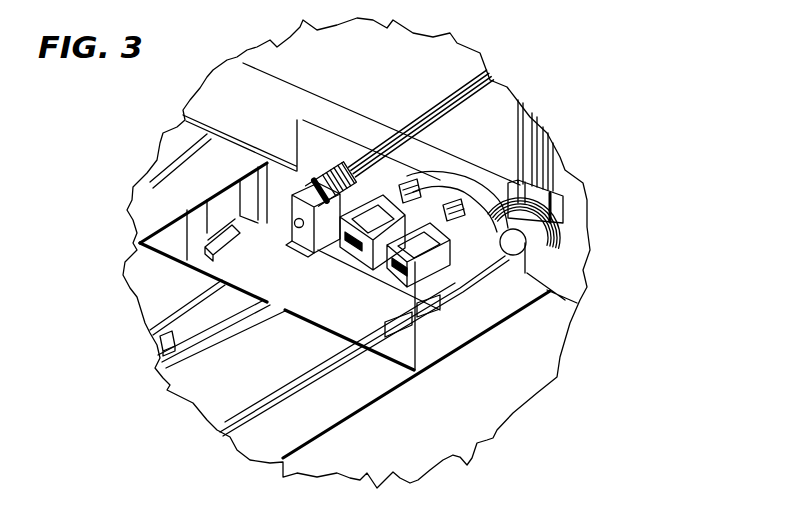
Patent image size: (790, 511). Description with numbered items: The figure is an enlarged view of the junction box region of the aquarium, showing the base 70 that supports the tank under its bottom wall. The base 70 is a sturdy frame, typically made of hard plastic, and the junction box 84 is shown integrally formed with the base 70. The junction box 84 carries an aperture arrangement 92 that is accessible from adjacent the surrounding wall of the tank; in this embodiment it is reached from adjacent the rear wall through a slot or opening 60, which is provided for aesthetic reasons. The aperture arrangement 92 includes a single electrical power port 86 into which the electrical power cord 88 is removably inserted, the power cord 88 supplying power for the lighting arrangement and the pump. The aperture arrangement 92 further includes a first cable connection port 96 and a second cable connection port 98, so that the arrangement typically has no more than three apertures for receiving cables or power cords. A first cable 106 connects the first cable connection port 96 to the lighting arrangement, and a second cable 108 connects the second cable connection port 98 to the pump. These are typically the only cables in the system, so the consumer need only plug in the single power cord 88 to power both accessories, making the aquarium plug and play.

The slot or opening 60 is at (403, 170).
The base 70 is at (272, 97).
The junction box 84 is at (358, 320).
The electrical power port 86 is at (288, 200).
The electrical power cord 88 is at (383, 160).
The aperture arrangement 92 is at (333, 163).
The first cable connection port 96 is at (455, 283).
The second cable connection port 98 is at (277, 302).
The first cable 106 is at (555, 220).
The second cable 108 is at (518, 252).